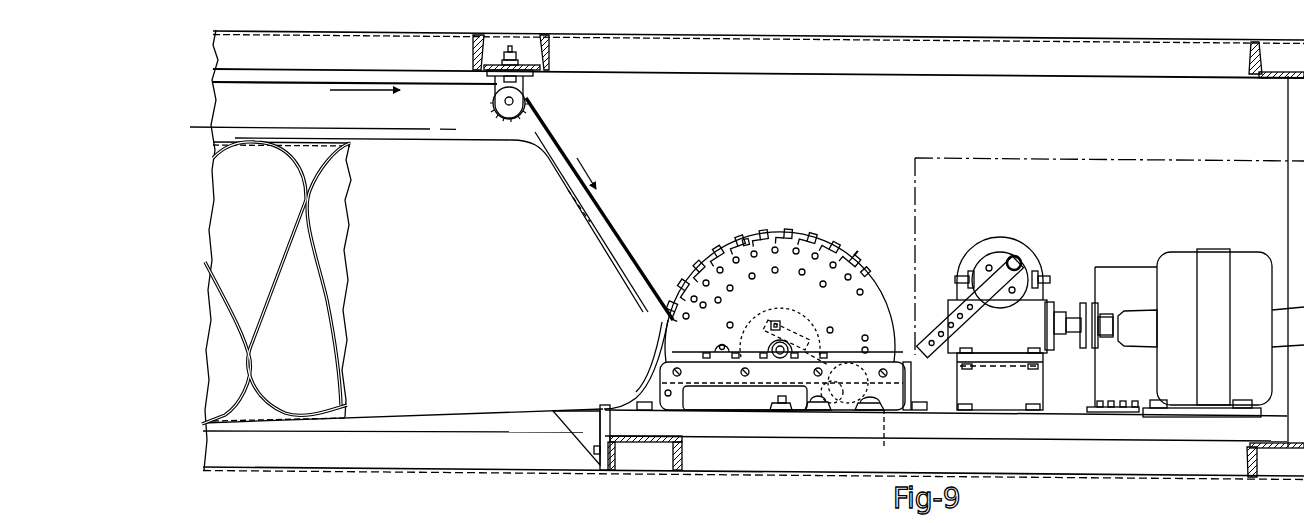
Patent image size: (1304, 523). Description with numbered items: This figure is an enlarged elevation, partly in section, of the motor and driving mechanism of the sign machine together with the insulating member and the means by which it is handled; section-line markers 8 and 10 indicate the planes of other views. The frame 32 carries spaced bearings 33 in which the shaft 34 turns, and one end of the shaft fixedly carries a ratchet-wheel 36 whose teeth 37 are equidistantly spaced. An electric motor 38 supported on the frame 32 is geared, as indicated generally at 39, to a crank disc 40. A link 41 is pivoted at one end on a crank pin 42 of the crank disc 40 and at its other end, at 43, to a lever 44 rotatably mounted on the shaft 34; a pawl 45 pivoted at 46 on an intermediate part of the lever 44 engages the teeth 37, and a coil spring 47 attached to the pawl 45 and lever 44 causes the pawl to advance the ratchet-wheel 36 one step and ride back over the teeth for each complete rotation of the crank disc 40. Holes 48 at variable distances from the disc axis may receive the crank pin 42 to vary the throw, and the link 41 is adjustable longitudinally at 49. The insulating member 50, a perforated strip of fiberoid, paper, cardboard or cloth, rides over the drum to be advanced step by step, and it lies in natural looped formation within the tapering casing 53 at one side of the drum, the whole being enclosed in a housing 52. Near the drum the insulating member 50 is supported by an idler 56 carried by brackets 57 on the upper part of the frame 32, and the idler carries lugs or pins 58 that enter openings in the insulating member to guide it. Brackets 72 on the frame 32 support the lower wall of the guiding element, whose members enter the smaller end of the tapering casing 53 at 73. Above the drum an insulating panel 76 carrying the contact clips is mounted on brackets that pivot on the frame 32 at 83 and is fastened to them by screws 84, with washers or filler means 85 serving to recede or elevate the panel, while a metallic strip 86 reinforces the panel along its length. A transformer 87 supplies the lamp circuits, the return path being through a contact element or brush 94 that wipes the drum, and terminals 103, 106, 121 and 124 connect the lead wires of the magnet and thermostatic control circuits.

The section line 8- 8 is at (198, 146).
The tappet drum / section line 10- 10 is at (790, 302).
The frame 32 is at (907, 396).
The bearings 33 is at (773, 372).
The shaft 34 is at (758, 348).
The ratchet-wheel 36 is at (803, 320).
The teeth 37 is at (790, 308).
The electric motor 38 is at (1250, 262).
The gearing 39 is at (1046, 300).
The crank disc 40 is at (1003, 246).
The link 41 is at (1002, 300).
The crank pin 42 is at (1021, 262).
The pivotal connection 43 is at (884, 435).
The lever 44 is at (872, 406).
The pawl 45 is at (822, 398).
The pawl pivot 46 is at (836, 362).
The coil spring 47 is at (841, 388).
The holes 48 is at (988, 266).
The longitudinal adjustment 49 is at (943, 322).
The insulating member 50 is at (630, 255).
The housing 52 is at (461, 466).
The tapering casing 53 is at (373, 267).
The idler 56 is at (501, 118).
The brackets 57 is at (523, 84).
The lugs or pins 58 is at (493, 95).
The brackets 72 is at (770, 410).
The casing entry 73 is at (636, 364).
The insulating panel 76 is at (766, 236).
The bracket axes 83 is at (745, 256).
The screws 84 is at (852, 256).
The washer or filler means 85 is at (857, 270).
The metallic strip 86 is at (694, 288).
The transformer 87 is at (1135, 267).
The contact element or brush 94 is at (822, 325).
The terminal 103 is at (1098, 402).
The terminal 106 is at (1110, 402).
The terminal 121 is at (1118, 412).
The terminal 124 is at (1137, 414).